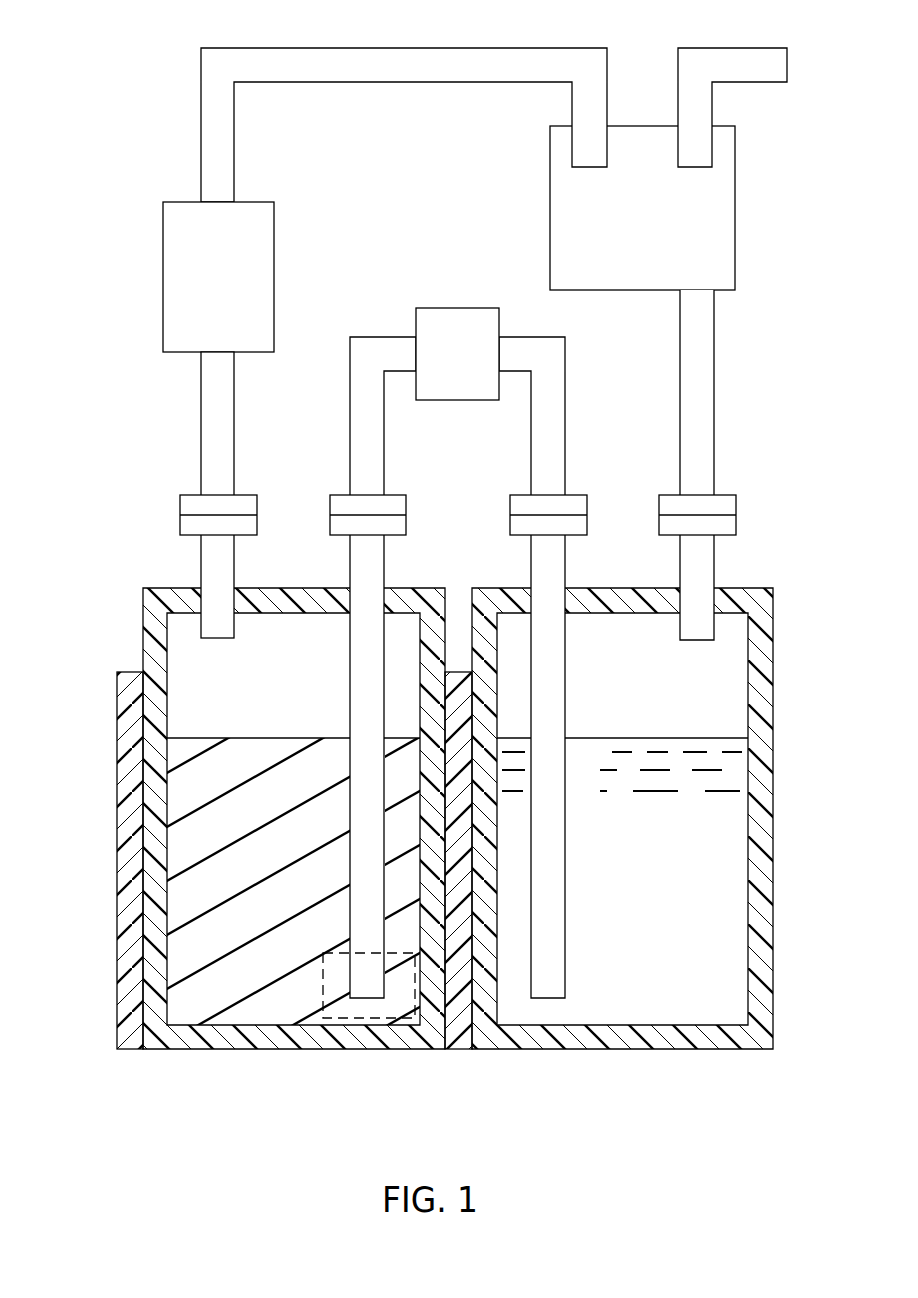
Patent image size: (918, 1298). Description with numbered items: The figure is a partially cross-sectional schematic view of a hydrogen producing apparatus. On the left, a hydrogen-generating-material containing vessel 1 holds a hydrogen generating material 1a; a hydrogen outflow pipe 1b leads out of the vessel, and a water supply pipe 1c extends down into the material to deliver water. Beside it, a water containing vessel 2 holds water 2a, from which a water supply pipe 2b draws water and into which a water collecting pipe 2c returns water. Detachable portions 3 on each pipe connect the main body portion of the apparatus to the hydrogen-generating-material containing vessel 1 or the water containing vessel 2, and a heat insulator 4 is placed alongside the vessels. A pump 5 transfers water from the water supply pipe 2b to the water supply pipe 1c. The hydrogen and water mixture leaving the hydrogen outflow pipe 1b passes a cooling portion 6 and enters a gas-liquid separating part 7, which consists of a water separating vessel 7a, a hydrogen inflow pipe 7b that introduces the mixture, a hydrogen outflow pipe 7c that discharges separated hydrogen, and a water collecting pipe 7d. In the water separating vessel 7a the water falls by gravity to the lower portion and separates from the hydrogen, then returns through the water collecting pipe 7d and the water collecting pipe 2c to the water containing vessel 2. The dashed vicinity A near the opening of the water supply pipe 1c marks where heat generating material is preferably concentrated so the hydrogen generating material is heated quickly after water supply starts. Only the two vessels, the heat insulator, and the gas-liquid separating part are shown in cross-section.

The hydrogen-generating-material containing vessel 1 is at (155, 842).
The hydrogen generating material 1a is at (200, 905).
The hydrogen outflow pipe 1b is at (236, 561).
The water supply pipe 1c is at (386, 561).
The water containing vessel 2 is at (762, 785).
The water 2a is at (715, 908).
The water supply pipe 2b is at (566, 561).
The water collecting pipe 2c is at (716, 561).
The detachable portion 3 is at (257, 505).
The heat insulator 4 is at (128, 790).
The pump 5 is at (452, 307).
The cooling portion 6 is at (258, 260).
The gas-liquid separating part 7 is at (501, 151).
The water separating vessel 7a is at (700, 228).
The hydrogen inflow pipe 7b is at (587, 146).
The hydrogen outflow pipe 7c is at (700, 147).
The water collecting pipe 7d is at (700, 388).
The vicinity of opening of water supply pipe A is at (306, 990).